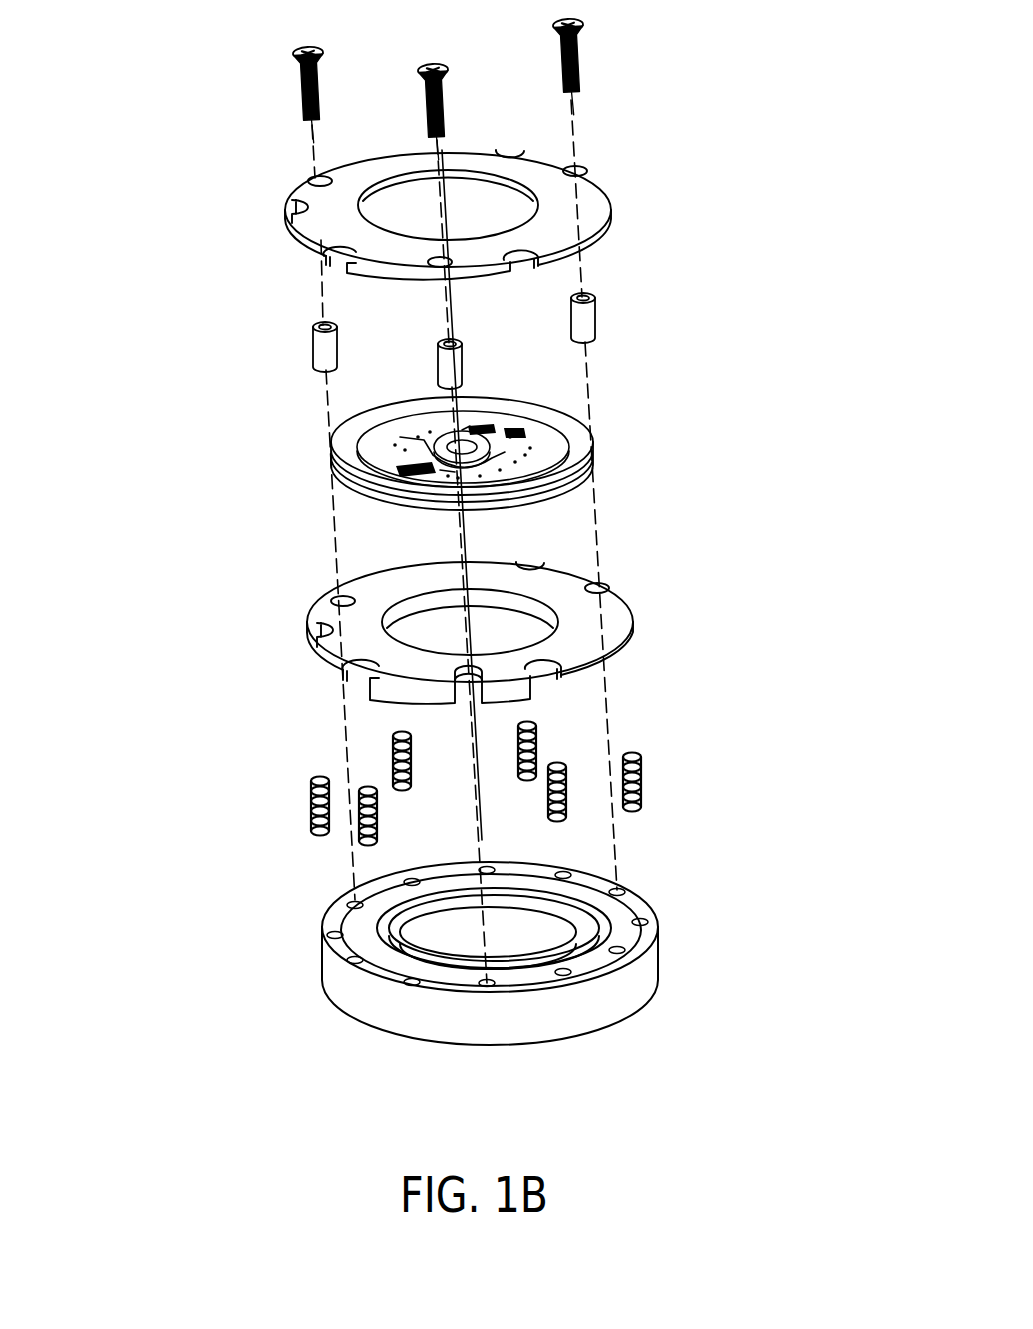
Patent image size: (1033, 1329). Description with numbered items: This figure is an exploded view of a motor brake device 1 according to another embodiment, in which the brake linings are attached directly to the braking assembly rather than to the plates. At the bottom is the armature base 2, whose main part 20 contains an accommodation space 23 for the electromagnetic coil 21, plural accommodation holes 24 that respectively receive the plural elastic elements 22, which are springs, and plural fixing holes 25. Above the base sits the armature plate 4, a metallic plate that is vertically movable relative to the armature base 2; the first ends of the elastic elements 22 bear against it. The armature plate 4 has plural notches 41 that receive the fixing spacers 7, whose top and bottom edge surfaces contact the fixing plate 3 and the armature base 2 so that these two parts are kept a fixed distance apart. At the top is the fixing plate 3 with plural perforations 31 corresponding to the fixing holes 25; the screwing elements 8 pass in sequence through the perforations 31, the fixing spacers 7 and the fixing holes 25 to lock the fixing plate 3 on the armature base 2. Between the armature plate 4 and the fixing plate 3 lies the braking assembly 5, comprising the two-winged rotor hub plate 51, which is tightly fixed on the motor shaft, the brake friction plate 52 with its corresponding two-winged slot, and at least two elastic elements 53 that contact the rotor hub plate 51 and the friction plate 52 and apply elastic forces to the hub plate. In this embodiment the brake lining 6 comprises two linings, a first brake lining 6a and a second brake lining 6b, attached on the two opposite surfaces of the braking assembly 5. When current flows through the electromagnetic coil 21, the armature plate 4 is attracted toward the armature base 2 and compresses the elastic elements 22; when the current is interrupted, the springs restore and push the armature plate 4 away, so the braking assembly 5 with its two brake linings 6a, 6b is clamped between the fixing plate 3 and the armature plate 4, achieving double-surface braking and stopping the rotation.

The motor brake device 1 is at (178, 40).
The armature base 2 is at (464, 946).
The main part 20 is at (357, 998).
The electromagnetic coil 21 is at (395, 943).
The elastic elements 22 is at (310, 800).
The accommodation space 23 is at (363, 935).
The accommodation holes 24 is at (565, 875).
The fixing holes 25 is at (355, 903).
The fixing plate 3 is at (444, 211).
The perforations 31 is at (313, 181).
The armature plate 4 is at (471, 633).
The notches 41 is at (337, 602).
The braking assembly 5 is at (560, 440).
The two-winged rotor hub plate 51 is at (472, 468).
The brake friction plate 52 is at (547, 453).
The elastic elements 53 is at (513, 428).
The brake lining 6 is at (395, 469).
The first brake lining 6a is at (350, 500).
The second brake lining 6b is at (340, 450).
The fixing spacers 7 is at (325, 350).
The screwing elements 8 is at (302, 83).